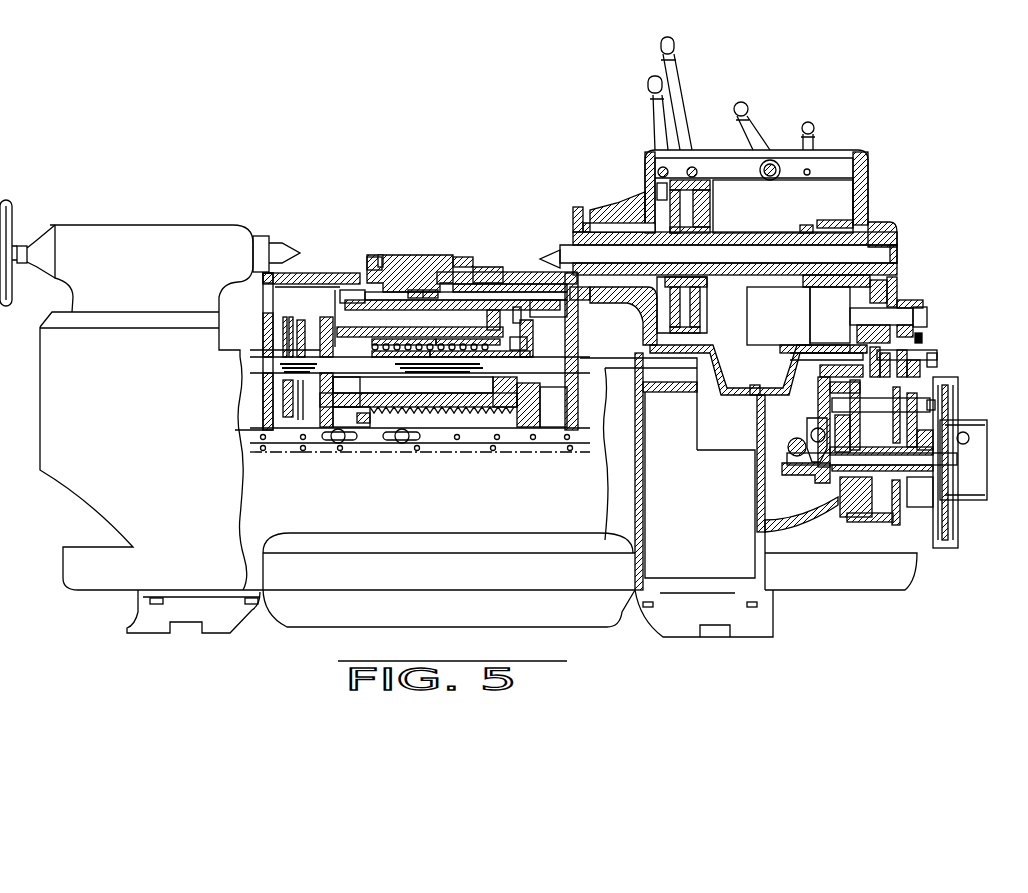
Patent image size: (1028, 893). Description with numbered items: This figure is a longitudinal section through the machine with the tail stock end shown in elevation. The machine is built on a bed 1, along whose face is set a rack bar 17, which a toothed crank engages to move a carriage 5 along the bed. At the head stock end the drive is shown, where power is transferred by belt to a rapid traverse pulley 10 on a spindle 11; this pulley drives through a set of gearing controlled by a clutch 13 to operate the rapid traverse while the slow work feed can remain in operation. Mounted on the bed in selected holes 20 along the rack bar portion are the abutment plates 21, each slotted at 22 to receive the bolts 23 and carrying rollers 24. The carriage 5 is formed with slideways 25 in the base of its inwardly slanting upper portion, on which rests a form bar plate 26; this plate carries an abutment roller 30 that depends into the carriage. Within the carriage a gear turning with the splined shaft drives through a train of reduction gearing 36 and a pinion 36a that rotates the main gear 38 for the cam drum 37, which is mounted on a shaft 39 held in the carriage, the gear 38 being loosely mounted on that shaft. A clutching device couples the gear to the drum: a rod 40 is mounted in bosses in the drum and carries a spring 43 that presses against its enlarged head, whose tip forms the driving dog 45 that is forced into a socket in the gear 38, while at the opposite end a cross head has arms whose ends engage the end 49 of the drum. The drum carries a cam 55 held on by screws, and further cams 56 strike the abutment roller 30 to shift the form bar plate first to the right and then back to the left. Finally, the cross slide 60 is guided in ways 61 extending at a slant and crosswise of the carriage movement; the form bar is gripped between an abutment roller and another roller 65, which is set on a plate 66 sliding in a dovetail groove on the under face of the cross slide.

The bed 1 is at (642, 508).
The carriage 5 is at (550, 427).
The rapid traverse pulley 10 is at (952, 528).
The spindle 11 is at (926, 457).
The clutch 13 is at (960, 440).
The rack bar 17 is at (253, 453).
The holes 20 is at (553, 450).
The abutment plates 21 is at (370, 433).
The slot 22 is at (415, 443).
The bolts 23 is at (340, 447).
The rollers 24 is at (350, 420).
The slideways 25 is at (347, 303).
The form bar plate 26 is at (428, 301).
The abutment roller 30 is at (517, 317).
The train of reduction gearing 36 is at (267, 398).
The pinion 36a is at (322, 423).
The cam drum 37 is at (463, 383).
The main gear 38 is at (327, 327).
The shaft 39 is at (482, 367).
The shaft or rod 40 is at (427, 357).
The spring 43 is at (398, 357).
The driving dog 45 is at (335, 337).
The end of the drum 49 is at (525, 345).
The cam 55 is at (397, 413).
The cams 56 is at (494, 317).
The cross slide 60 is at (437, 262).
The ways 61 is at (385, 258).
The roller 65 is at (455, 275).
The plate 66 is at (428, 292).